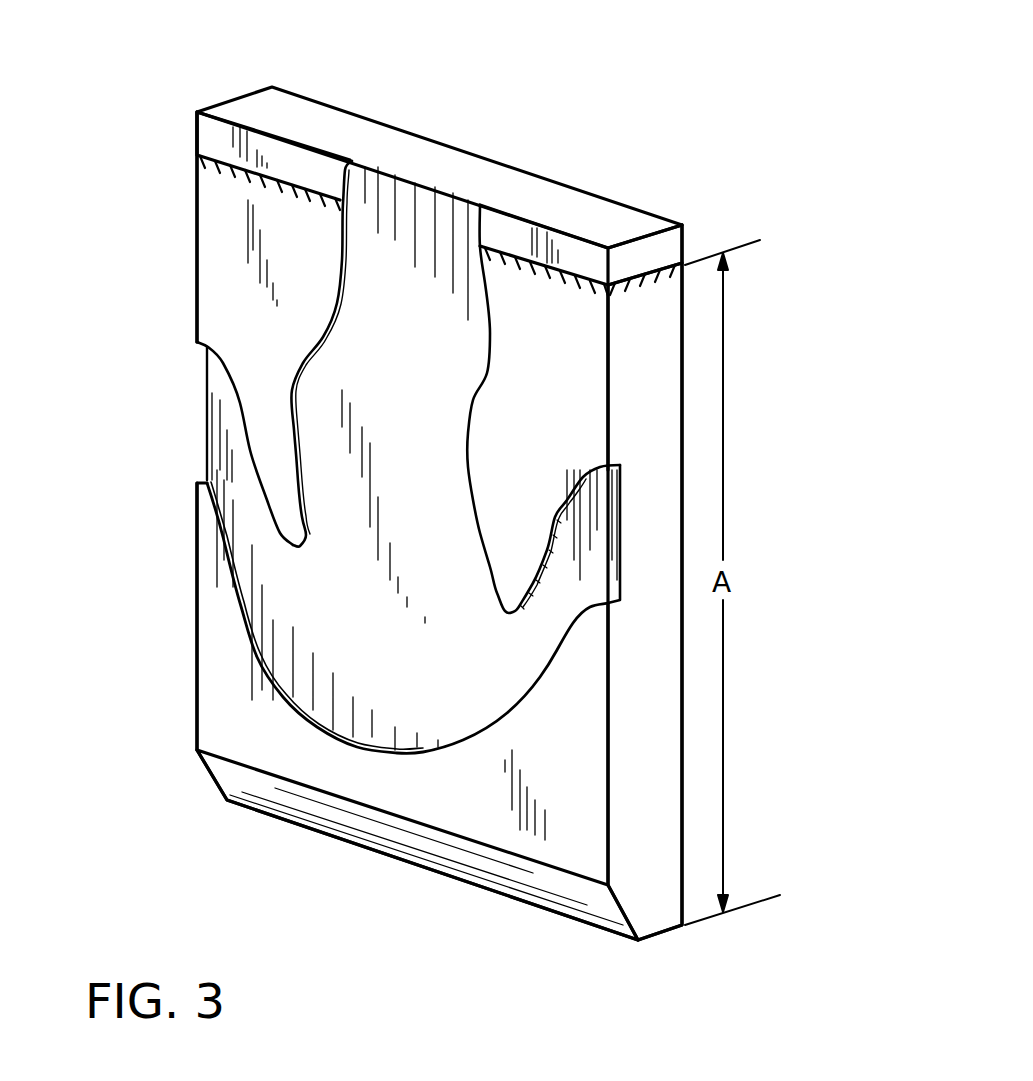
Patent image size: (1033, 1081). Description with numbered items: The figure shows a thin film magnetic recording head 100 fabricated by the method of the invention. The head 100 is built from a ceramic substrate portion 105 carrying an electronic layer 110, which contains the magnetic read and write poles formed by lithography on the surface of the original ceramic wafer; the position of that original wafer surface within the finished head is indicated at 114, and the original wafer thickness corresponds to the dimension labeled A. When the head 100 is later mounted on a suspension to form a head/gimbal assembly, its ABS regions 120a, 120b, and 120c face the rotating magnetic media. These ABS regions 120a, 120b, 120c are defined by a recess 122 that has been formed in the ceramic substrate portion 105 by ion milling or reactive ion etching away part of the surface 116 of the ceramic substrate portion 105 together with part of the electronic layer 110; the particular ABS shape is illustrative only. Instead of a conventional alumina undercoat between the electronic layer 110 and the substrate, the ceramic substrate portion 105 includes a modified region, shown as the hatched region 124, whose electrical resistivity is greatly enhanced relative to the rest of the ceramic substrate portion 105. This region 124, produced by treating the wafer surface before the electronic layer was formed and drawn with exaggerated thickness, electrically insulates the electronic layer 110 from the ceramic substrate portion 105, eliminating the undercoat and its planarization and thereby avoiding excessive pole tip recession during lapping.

The magnetic recording head 100 is at (895, 156).
The ceramic substrate portion 105 is at (642, 832).
The electronic layer 110 is at (213, 142).
The original wafer surface position 114 is at (277, 172).
The surface of the ceramic substrate portion 116 is at (231, 684).
The ABS region 120a is at (301, 222).
The ABS region 120b is at (530, 307).
The ABS region 120c is at (425, 793).
The recess 122 is at (353, 703).
The modified region 124 is at (585, 283).